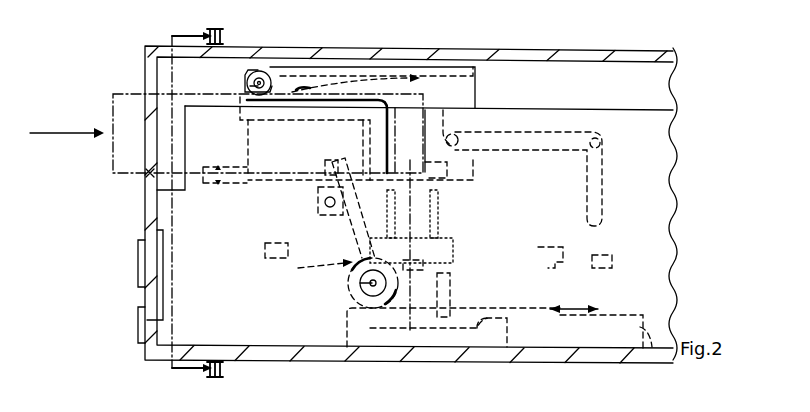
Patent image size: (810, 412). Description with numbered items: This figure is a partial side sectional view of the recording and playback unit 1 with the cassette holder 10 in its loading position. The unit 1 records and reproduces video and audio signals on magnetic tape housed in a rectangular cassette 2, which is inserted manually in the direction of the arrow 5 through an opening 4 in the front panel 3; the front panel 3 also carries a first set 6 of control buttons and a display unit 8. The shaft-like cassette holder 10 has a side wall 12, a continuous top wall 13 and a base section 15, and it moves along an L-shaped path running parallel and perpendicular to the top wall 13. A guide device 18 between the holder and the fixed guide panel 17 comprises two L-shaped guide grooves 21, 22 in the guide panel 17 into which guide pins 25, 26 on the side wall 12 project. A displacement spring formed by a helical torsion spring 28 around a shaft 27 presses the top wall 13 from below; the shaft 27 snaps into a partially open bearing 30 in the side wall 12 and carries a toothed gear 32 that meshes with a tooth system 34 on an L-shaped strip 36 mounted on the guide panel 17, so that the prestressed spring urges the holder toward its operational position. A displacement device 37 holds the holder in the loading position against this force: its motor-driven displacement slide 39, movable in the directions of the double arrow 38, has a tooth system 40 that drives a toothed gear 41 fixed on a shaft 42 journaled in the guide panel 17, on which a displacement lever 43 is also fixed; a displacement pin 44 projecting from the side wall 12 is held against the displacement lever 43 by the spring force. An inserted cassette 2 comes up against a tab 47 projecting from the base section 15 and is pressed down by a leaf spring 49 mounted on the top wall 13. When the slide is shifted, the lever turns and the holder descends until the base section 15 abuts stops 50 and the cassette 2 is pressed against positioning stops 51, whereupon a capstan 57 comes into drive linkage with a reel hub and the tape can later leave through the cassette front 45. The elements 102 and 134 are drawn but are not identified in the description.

The recording and playback unit 1 is at (607, 48).
The cassette 2 is at (128, 88).
The front panel 3 is at (152, 207).
The opening 4 is at (148, 173).
The arrow 5 is at (61, 133).
The first set of control buttons 6 is at (134, 308).
The display unit 8 is at (176, 298).
The cassette holder 10 is at (476, 72).
The side wall 12 is at (470, 98).
The top wall 13 is at (347, 75).
The base section 15 is at (462, 181).
The guide panel 17 is at (640, 117).
The guide device 18 is at (560, 125).
The guide groove 21 is at (369, 141).
The guide groove 22 is at (601, 141).
The guide pin 25 is at (215, 187).
The guide pin 26 is at (458, 136).
The shaft 27 is at (259, 71).
The helical torsion spring 28 is at (264, 135).
The bearing 30 is at (246, 80).
The toothed gear 32 is at (248, 90).
The tooth system 34 is at (305, 99).
The L-shaped strip 36 is at (336, 117).
The displacement device 37 is at (271, 277).
The double arrow 38 is at (577, 313).
The displacement slide 39 is at (652, 348).
The tooth system 40 is at (439, 327).
The toothed gear 41 is at (360, 283).
The shaft 42 is at (360, 285).
The displacement lever 43 is at (345, 224).
The displacement pin 44 is at (324, 198).
The front of the cassette 45 is at (428, 110).
The tab 47 is at (450, 168).
The leaf spring 49 is at (386, 90).
The stops 50 is at (440, 264).
The positioning stops 51 is at (270, 243).
The capstan 57 is at (432, 213).
The contact 102 is at (450, 280).
The lug 134 is at (477, 330).